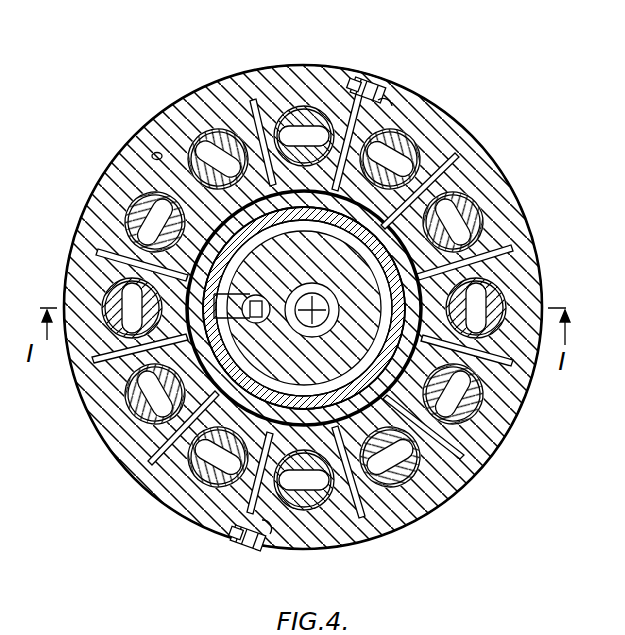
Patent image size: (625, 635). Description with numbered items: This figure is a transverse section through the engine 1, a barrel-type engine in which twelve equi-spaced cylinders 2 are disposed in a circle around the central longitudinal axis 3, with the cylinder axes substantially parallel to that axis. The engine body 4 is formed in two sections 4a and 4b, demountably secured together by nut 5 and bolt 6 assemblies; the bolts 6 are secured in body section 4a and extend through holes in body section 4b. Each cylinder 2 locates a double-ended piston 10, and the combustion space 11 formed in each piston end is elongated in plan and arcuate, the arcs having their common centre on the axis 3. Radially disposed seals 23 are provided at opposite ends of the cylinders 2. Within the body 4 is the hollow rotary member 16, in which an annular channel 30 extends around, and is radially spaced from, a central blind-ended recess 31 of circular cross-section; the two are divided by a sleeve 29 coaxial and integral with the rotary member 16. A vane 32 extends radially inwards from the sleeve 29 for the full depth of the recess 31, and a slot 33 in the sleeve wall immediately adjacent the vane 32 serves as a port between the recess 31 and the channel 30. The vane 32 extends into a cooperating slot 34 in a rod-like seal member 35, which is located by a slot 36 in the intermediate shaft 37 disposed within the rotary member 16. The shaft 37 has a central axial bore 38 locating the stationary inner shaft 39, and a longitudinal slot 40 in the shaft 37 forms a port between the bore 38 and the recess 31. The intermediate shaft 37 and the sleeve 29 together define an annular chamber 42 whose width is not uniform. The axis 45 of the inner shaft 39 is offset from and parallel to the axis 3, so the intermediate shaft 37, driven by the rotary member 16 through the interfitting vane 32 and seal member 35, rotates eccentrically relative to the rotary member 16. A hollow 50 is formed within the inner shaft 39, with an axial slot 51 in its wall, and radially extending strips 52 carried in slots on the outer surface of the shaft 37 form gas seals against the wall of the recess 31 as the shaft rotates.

The engine 1 is at (236, 64).
The cylinders 2 is at (445, 505).
The central longitudinal axis 3 is at (306, 238).
The engine body 4 is at (418, 82).
The first body section 4a is at (185, 115).
The second body section 4b is at (420, 124).
The nut 5 is at (385, 86).
The bolt 6 is at (352, 82).
The piston 10 is at (183, 116).
The combustion space 11 is at (205, 150).
The rotary member 16 is at (196, 243).
The radially disposed seals 23 is at (195, 160).
The sleeve 29 is at (470, 490).
The annular channel 30 is at (245, 282).
The central recess 31 is at (97, 257).
The vane 32 is at (128, 360).
The slot 33 is at (125, 388).
The cooperating slot 34 is at (236, 297).
The seal member 35 is at (133, 410).
The slot 36 is at (250, 480).
The intermediate shaft 37 is at (300, 232).
The central axial bore 38 is at (212, 525).
The inner shaft 39 is at (425, 378).
The longitudinal slot 40 is at (135, 200).
The annular chamber 42 is at (150, 155).
The longitudinal axis of inner shaft 45 is at (512, 250).
The hollow 50 is at (480, 200).
The axial slot 51 is at (416, 200).
The radially extending strips 52 is at (388, 183).